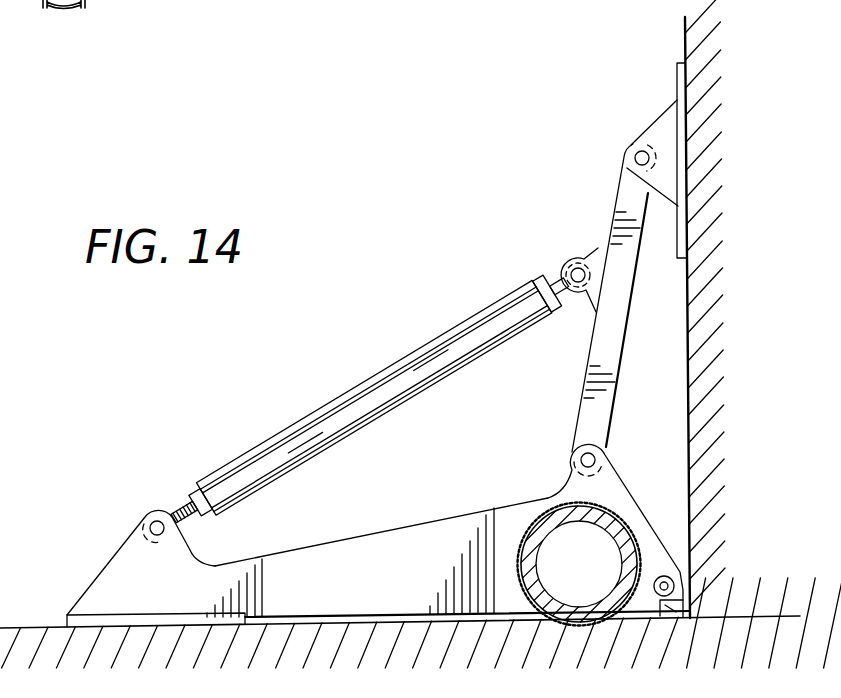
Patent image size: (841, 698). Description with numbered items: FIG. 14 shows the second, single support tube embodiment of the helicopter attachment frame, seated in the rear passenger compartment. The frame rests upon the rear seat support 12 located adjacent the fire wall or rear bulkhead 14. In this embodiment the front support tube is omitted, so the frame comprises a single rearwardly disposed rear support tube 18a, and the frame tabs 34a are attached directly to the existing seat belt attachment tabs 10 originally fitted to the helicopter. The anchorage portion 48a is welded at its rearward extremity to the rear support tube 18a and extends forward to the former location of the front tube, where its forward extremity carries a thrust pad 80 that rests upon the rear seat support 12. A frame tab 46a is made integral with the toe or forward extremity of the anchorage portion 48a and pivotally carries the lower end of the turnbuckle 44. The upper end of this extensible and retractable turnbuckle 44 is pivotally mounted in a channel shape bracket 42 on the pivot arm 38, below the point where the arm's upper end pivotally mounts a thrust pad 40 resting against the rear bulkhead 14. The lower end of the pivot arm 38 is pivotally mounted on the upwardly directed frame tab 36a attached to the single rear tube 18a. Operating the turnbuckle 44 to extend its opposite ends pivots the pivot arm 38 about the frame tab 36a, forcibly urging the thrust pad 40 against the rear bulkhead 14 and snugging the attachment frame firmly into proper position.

The seat belt attachment tab 10 is at (690, 612).
The rear seat support 12 is at (22, 627).
The rear bulkhead 14 is at (685, 40).
The rear support tube 18a is at (530, 583).
The frame tab 34a is at (656, 553).
The frame tab 36a is at (566, 486).
The pivot arm 38 is at (592, 352).
The thrust pad 40 is at (677, 78).
The channel shape bracket 42 is at (580, 260).
The turnbuckle 44 is at (378, 376).
The frame tab 46a is at (190, 541).
The anchorage portion 48a is at (400, 534).
The thrust pad 80 is at (90, 615).